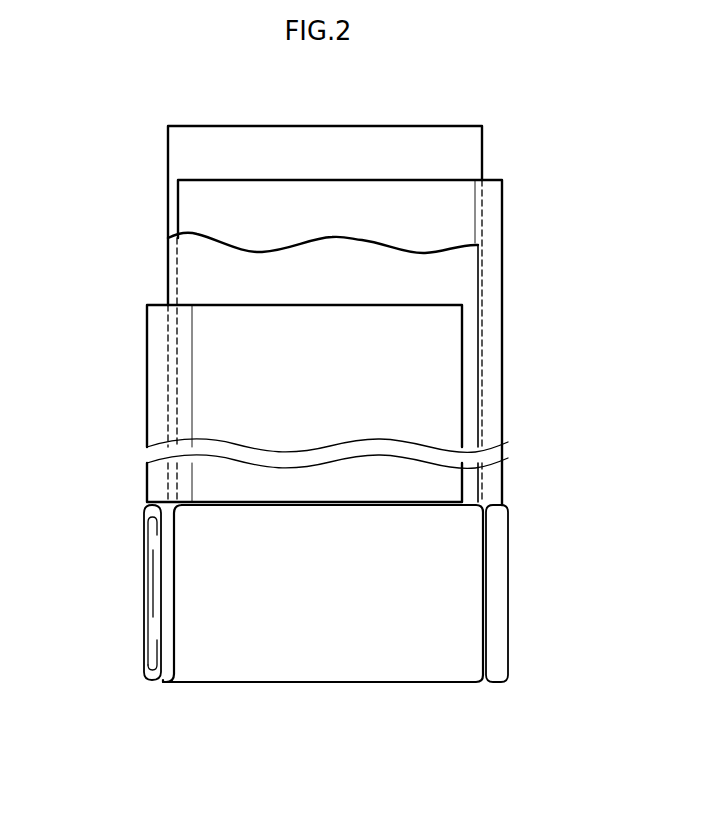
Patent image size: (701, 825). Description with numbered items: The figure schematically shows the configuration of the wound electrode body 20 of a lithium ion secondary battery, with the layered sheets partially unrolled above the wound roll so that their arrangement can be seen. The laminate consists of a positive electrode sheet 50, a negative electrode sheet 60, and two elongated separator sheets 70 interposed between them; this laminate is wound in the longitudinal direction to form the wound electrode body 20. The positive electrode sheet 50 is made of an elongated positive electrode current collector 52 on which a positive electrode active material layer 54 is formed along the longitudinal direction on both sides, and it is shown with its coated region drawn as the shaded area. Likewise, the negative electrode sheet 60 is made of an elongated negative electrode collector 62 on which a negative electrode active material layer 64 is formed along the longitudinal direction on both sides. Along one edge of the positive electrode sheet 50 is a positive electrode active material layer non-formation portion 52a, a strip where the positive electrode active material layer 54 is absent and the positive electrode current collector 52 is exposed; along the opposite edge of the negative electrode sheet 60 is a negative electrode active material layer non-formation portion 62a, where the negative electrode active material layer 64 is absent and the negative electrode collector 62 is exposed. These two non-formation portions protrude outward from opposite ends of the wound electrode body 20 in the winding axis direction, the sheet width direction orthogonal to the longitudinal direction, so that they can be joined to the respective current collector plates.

The wound electrode body 20 is at (320, 441).
The positive electrode sheet 50 is at (266, 492).
The positive electrode current collector 52 is at (147, 434).
The positive electrode active material layer non-formation portion 52a is at (162, 404).
The positive electrode active material layer 54 is at (205, 323).
The negative electrode sheet 60 is at (396, 429).
The negative electrode collector 62 is at (505, 350).
The negative electrode active material layer non-formation portion 62a is at (492, 320).
The negative electrode active material layer 64 is at (470, 205).
The separator sheet 70 is at (188, 149).